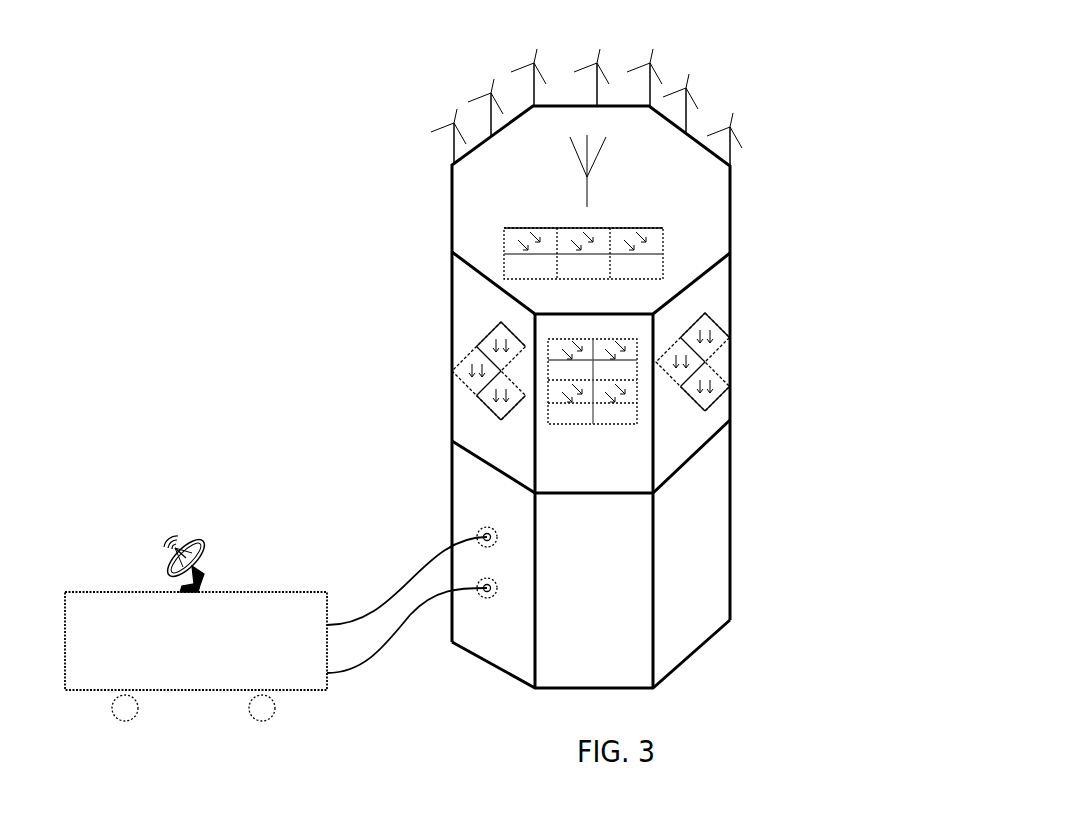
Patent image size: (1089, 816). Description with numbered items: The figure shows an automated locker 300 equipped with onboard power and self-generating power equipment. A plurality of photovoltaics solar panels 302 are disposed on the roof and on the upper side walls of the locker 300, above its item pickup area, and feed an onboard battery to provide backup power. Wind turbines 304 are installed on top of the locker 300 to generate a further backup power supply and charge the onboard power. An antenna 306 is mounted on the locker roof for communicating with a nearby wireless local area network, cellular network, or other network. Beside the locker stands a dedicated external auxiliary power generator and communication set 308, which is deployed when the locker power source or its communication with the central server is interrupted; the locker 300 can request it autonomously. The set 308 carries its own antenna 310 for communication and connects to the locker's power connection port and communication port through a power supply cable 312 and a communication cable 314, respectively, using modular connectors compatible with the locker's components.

The automated locker 300 is at (334, 102).
The photovoltaics solar panels 302 is at (665, 240).
The wind turbines 304 is at (700, 94).
The antenna 306 is at (587, 177).
The external auxiliary power generator and communication set 308 is at (297, 663).
The antenna 310 is at (170, 518).
The power supply cable 312 is at (407, 578).
The communication cable 314 is at (420, 677).